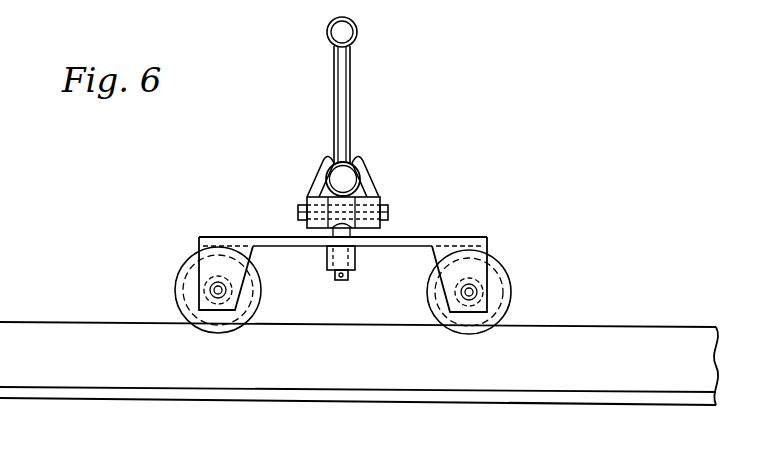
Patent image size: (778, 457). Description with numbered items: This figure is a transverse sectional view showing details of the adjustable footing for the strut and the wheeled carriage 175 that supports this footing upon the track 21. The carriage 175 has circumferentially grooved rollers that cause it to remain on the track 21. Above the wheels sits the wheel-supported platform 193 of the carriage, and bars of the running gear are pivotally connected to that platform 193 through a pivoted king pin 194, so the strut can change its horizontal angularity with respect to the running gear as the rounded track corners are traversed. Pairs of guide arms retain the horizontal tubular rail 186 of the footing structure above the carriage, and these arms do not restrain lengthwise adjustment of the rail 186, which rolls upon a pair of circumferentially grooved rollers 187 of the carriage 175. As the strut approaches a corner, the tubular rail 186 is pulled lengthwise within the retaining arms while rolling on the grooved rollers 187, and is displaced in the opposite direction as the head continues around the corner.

The track 21 is at (641, 336).
The wheeled carriage 175 is at (470, 233).
The horizontal tubular rail 186 is at (353, 164).
The circumferentially grooved rollers 187 is at (325, 203).
The wheel-supported platform 193 is at (271, 236).
The king pin 194 is at (350, 277).